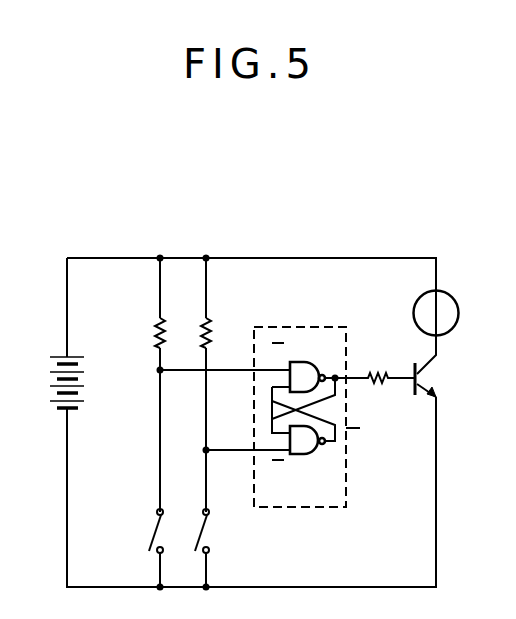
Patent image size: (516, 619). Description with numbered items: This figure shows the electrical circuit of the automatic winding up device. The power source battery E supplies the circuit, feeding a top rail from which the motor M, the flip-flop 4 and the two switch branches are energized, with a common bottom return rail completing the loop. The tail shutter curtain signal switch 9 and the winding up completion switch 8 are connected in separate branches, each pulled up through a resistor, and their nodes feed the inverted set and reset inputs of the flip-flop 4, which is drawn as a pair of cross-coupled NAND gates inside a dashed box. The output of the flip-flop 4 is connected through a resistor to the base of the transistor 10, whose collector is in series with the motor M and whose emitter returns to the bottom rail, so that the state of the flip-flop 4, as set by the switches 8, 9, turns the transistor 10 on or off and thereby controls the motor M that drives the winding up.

The flip-flop 4 is at (307, 402).
The winding up completion switch 8 is at (219, 531).
The tail shutter curtain signal switch 9 is at (139, 531).
The transistor 10 is at (440, 366).
The power source battery E is at (60, 382).
The motor M is at (436, 313).